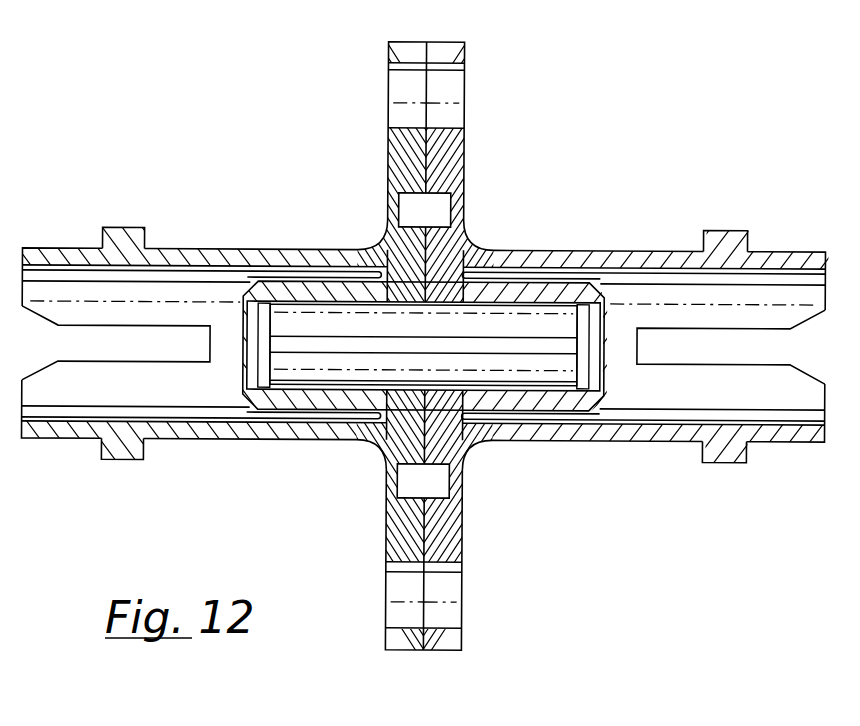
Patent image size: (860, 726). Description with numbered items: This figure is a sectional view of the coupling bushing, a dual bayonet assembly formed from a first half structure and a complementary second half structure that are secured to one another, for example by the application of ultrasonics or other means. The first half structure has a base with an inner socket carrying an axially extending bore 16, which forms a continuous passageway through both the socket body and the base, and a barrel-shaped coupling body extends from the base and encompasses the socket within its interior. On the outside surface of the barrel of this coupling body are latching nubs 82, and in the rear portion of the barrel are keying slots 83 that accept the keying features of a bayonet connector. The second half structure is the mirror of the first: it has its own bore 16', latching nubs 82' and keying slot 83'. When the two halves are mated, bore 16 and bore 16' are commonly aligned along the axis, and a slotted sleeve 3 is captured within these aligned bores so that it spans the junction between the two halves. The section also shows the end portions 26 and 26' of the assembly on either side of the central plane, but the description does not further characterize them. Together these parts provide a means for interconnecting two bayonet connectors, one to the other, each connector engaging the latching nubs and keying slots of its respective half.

The slotted sleeve 3 is at (493, 308).
The bore 16 is at (423, 387).
The bore 16' is at (423, 404).
The journal portion 26 is at (377, 345).
The journal portion 26' is at (484, 348).
The latching nubs 82 is at (123, 343).
The latching nubs 82' is at (725, 349).
The keying slots 83 is at (111, 343).
The keying slots 83' is at (744, 346).